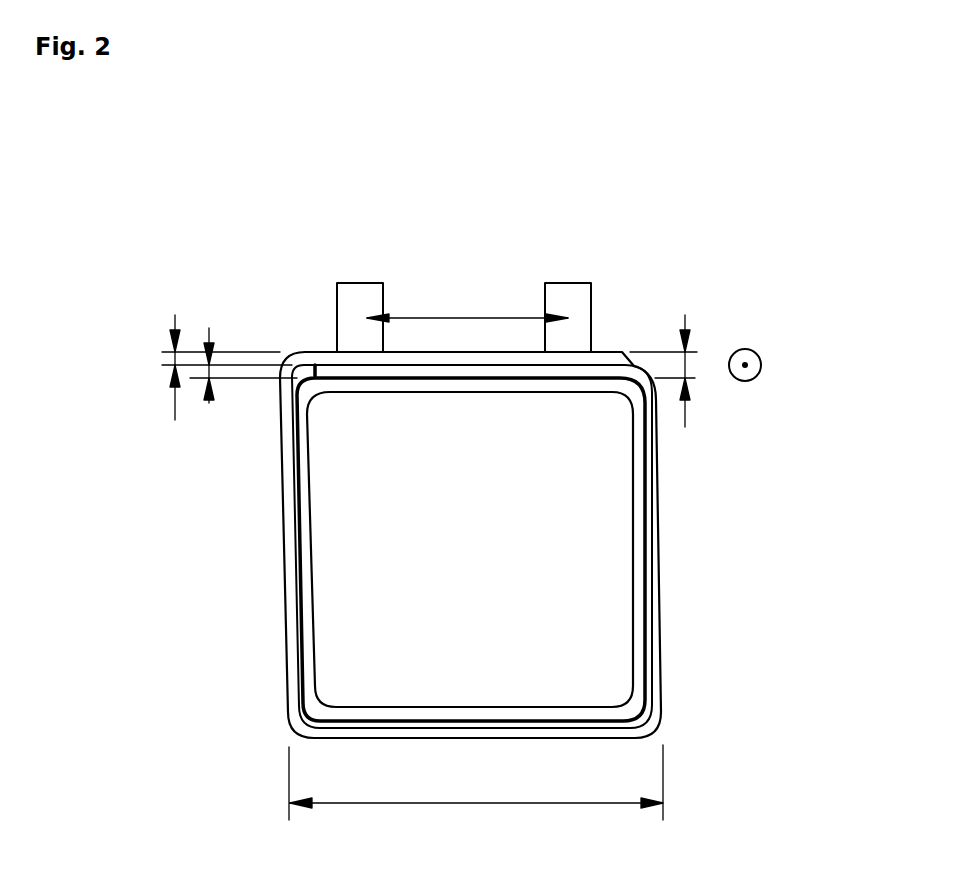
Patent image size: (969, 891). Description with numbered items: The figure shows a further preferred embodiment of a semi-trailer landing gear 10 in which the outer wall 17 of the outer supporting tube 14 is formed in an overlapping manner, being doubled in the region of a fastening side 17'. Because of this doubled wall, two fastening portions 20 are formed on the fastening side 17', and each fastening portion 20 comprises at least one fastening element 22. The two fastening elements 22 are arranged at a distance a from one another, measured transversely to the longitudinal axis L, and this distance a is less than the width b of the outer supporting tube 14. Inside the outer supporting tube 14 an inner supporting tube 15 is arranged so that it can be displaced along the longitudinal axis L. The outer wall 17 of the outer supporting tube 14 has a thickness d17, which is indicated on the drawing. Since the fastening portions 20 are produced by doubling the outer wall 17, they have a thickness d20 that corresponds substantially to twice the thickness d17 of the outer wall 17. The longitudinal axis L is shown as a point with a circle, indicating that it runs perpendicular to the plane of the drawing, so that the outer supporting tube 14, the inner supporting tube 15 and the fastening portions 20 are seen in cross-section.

The semi-trailer landing gear 10 is at (693, 635).
The outer supporting tube 14 is at (293, 660).
The inner supporting tube 15 is at (307, 500).
The outer wall 17 is at (409, 566).
The fastening side 17' is at (469, 231).
The fastening portion 20 is at (318, 337).
The fastening element 22 is at (363, 387).
The thickness of the outer wall d17 is at (174, 322).
The thickness of the fastening portions d20 is at (685, 415).
The distance a is at (455, 316).
The width of the outer supporting tube b is at (467, 803).
The longitudinal axis L is at (745, 365).